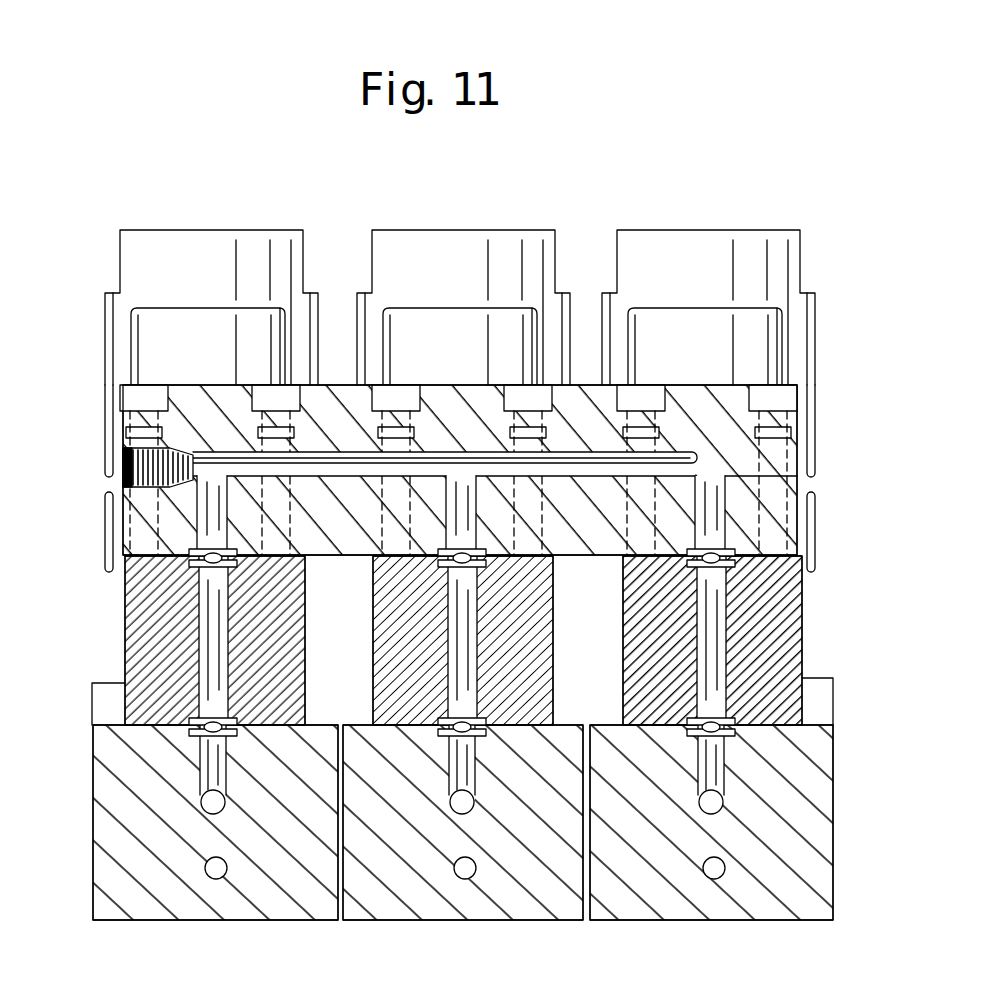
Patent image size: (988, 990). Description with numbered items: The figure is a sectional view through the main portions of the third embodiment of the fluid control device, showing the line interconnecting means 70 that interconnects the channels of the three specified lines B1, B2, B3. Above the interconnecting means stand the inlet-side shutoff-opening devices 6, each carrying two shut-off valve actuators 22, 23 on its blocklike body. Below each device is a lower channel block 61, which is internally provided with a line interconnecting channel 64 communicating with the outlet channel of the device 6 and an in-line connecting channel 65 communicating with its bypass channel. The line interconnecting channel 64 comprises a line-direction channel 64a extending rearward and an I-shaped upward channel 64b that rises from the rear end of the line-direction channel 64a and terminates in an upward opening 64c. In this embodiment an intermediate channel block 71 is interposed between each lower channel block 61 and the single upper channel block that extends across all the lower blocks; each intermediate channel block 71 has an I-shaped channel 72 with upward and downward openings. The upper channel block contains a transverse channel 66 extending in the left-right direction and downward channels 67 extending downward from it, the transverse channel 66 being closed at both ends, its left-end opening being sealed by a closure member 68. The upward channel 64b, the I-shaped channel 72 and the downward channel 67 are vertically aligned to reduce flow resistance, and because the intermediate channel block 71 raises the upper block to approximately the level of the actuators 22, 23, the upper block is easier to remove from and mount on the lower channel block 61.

The inlet-side shutoff-opening device 6 is at (462, 376).
The line B1 is at (740, 376).
The line B2 is at (506, 226).
The line B3 is at (117, 246).
The shut-off valve actuator 22 is at (755, 331).
The shut-off valve actuator 23 is at (783, 266).
The transverse channel 66 is at (697, 458).
The downward channel 67 is at (205, 505).
The closure member 68 is at (126, 458).
The line interconnecting means 70 is at (463, 515).
The intermediate channel block 71 is at (504, 640).
The I-shaped channel 72 is at (718, 606).
The lower channel block 61 is at (110, 750).
The line interconnecting channel 64 is at (556, 764).
The line-direction channel 64a is at (722, 802).
The upward channel 64b is at (722, 776).
The upward opening 64c is at (697, 728).
The in-line connecting channel 65 is at (218, 876).